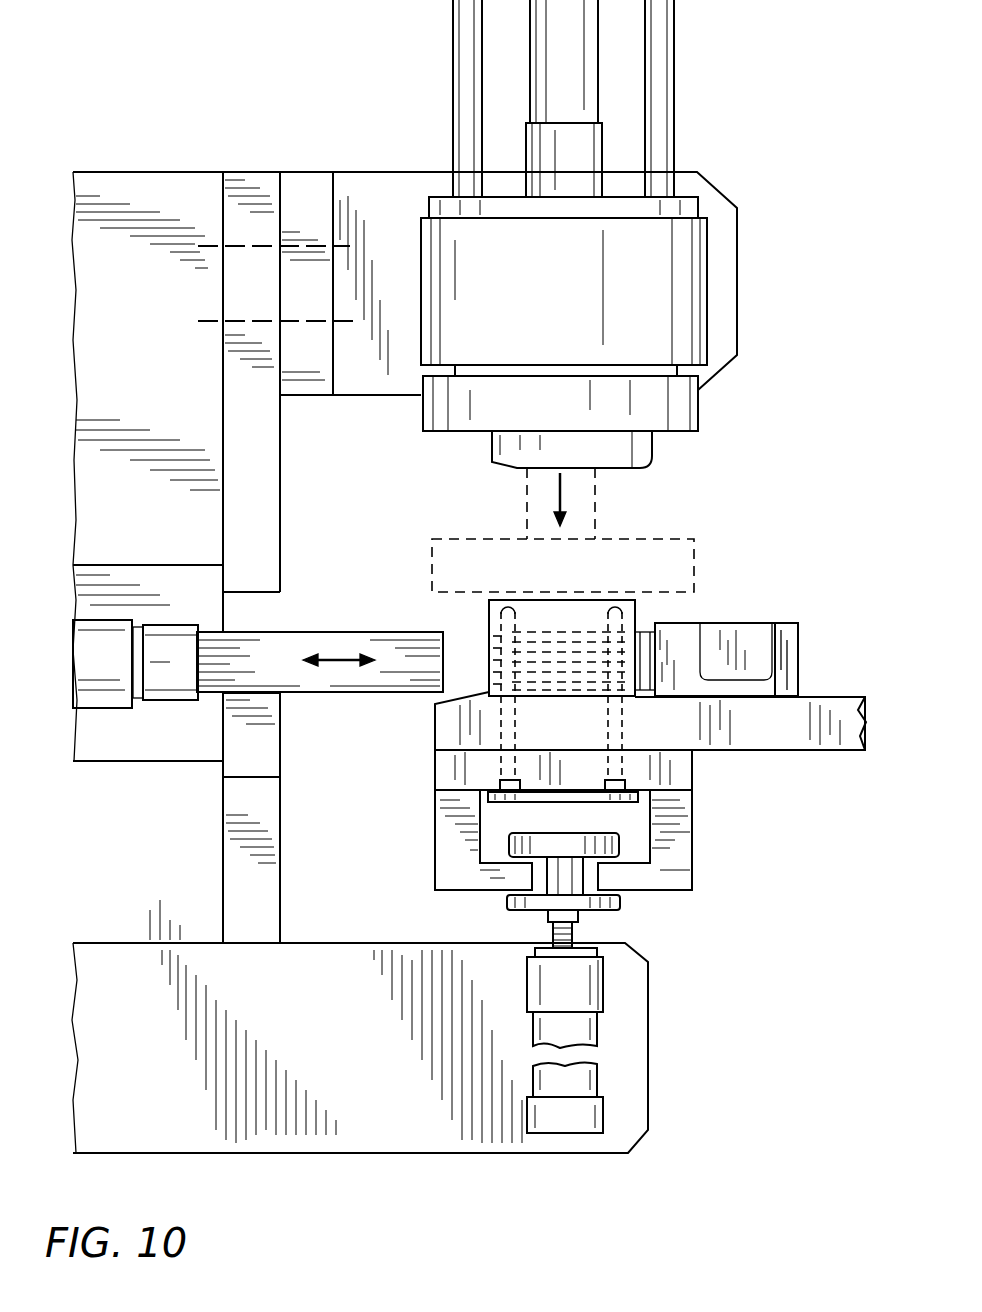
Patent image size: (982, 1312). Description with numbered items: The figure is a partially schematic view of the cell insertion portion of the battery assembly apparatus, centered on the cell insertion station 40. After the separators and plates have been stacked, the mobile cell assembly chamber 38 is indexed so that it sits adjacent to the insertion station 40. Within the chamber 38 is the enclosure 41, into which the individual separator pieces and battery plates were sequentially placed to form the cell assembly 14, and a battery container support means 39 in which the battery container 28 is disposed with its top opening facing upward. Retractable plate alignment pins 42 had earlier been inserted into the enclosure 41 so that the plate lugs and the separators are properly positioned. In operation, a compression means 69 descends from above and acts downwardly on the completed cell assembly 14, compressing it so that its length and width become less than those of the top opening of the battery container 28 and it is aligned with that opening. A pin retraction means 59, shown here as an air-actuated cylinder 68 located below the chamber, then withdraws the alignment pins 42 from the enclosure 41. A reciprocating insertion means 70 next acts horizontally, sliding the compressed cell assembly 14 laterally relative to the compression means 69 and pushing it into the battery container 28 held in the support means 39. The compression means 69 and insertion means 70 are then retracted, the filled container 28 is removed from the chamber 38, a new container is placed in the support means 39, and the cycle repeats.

The cell insertion station 40 is at (375, 166).
The compression means 69 is at (690, 410).
The reciprocating insertion means 70 is at (346, 622).
The enclosure 41 is at (563, 612).
The retractable plate alignment pins 42 is at (489, 617).
The cell assembly 14 is at (597, 685).
The battery container 28 is at (725, 635).
The battery container support means 39 is at (790, 630).
The mobile cell assembly chamber 38 is at (491, 692).
The pin retraction means 59 is at (650, 840).
The air-actuated cylinder 68 is at (597, 990).